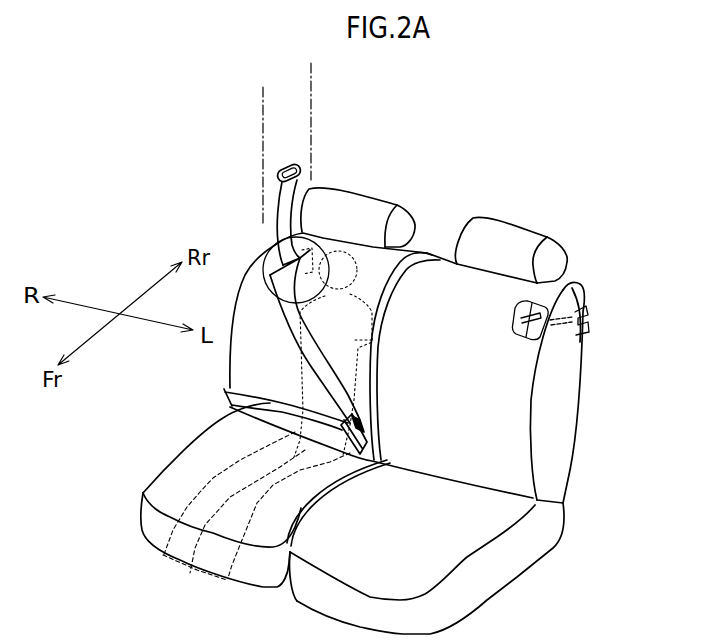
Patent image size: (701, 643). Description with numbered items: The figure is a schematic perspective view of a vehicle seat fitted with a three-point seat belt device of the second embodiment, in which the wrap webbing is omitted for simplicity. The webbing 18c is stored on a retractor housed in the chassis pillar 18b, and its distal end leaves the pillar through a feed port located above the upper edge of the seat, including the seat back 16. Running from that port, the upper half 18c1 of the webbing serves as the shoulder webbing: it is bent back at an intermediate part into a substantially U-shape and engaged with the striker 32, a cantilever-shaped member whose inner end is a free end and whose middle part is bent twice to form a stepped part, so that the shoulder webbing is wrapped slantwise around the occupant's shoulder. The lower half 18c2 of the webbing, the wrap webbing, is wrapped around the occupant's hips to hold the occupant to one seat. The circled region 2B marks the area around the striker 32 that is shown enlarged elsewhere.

The enlarged portion of shoulder belt guide 2B is at (264, 252).
The seat back 16 is at (512, 430).
The chassis pillar 18b is at (295, 128).
The webbing 18c is at (239, 357).
The upper half of the webbing 18c1 is at (303, 366).
The lower half of the webbing 18c2 is at (201, 439).
The striker 32 is at (585, 284).